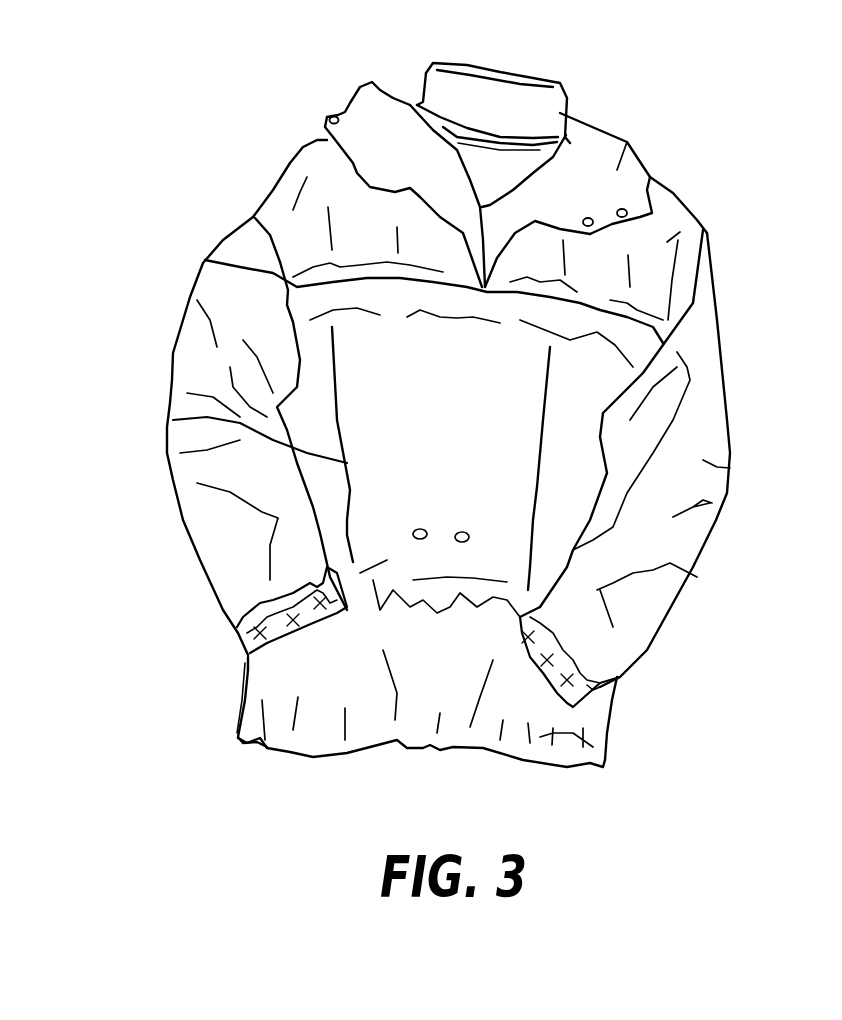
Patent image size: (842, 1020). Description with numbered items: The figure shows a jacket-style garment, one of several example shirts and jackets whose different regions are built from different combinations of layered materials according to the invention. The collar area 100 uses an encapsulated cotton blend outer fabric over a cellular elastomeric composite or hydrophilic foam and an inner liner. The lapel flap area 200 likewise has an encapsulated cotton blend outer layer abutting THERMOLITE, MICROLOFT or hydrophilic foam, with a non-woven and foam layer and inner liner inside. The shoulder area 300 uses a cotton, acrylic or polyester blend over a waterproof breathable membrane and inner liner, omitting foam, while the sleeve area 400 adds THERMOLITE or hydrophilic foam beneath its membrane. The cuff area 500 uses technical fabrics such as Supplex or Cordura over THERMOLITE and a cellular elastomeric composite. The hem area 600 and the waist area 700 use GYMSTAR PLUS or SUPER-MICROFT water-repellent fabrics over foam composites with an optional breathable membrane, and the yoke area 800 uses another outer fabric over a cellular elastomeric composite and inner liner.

The apparel area of encapsulated cotton blend with foam and inner liner 100 is at (493, 160).
The apparel area of encapsulated cotton blend with THERMOLITE and non-woven foam 200 is at (627, 142).
The apparel area of fabric blend with waterproof breathable membrane 300 is at (697, 218).
The apparel area of fabric blend with membrane and THERMOLITE or foam 400 is at (710, 430).
The apparel area of technical outer fabric with THERMOLITE and elastomeric composite 500 is at (600, 687).
The apparel area of water-repellent fabric with non-woven foam composite 600 is at (607, 760).
The apparel area of water-repellent fabric abutting THERMOLITE with elastomeric comp 700 is at (173, 420).
The apparel area of outer fabric with cellular elastomeric composite 800 is at (205, 260).